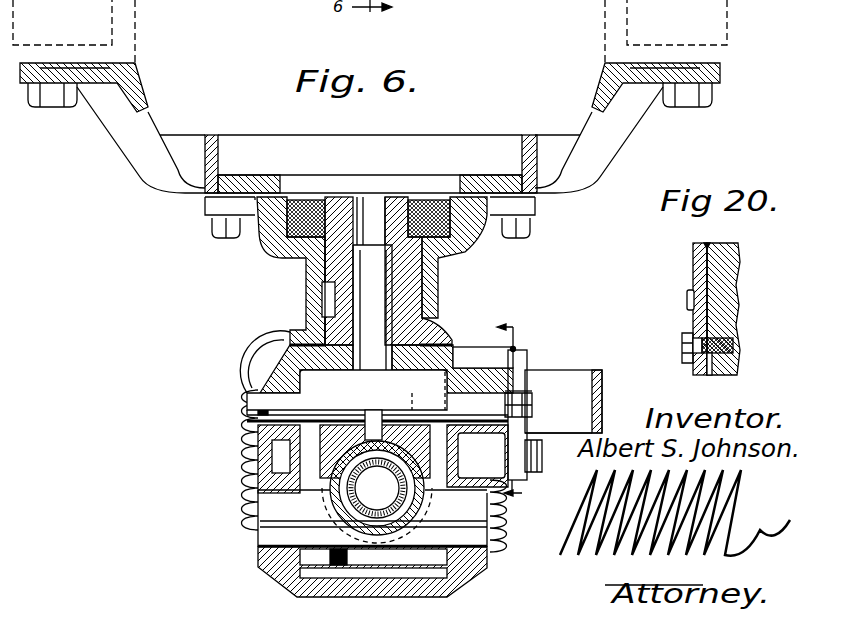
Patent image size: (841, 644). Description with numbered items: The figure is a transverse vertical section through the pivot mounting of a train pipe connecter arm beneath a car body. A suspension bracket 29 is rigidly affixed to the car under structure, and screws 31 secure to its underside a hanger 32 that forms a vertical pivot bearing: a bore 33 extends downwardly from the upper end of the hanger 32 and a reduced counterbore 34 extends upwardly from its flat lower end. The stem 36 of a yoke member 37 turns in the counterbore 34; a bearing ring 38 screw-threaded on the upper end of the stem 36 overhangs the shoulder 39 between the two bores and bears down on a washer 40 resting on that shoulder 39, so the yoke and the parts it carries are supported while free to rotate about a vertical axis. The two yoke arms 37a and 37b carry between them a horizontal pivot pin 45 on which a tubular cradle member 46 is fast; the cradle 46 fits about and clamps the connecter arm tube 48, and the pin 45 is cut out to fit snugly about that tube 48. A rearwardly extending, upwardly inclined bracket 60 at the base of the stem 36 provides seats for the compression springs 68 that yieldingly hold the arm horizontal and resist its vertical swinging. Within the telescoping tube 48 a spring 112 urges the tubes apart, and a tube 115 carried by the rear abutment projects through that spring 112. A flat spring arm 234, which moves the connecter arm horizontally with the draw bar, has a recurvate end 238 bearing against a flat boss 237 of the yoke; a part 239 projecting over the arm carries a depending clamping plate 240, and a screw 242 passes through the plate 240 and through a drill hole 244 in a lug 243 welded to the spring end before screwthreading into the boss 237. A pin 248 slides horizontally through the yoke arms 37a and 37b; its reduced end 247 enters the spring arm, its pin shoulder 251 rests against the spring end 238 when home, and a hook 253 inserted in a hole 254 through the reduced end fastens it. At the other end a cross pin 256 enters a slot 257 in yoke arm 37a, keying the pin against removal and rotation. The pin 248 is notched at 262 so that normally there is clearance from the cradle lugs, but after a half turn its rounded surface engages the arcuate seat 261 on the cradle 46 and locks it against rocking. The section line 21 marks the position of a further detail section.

In FIG. 6, the suspension bracket 29 is at (593, 99).
In FIG. 6, the screws 31 is at (231, 235).
In FIG. 6, the hanger 32 is at (273, 242).
In FIG. 6, the bore 33 is at (310, 198).
In FIG. 6, the counterbore 34 is at (325, 260).
In FIG. 6, the stem 36 is at (408, 298).
In FIG. 6, the yoke member 37 is at (273, 361).
In FIG. 6, the yoke arm 37a is at (270, 458).
In FIG. 6, the yoke arm 37b is at (456, 451).
In FIG. 6, the bearing ring 38 is at (423, 206).
In FIG. 6, the shoulder 39 is at (454, 263).
In FIG. 6, the washer 40 is at (479, 242).
In FIG. 6, the horizontal pivot pin 45 is at (372, 518).
In FIG. 6, the cradle member 46 is at (460, 571).
In FIG. 6, the connecter arm tube 48 is at (424, 510).
In FIG. 6, the bracket 60 is at (266, 337).
In FIG. 6, the compression springs 68 is at (256, 451).
In FIG. 6, the spring 112 is at (343, 503).
In FIG. 6, the tube 115 is at (345, 507).
In FIG. 6, the spring arm 234 is at (599, 372).
In FIG. 20, the boss 237 is at (722, 313).
In FIG. 6, the recurvate end 238 is at (515, 386).
In FIG. 20, the recurvate end 238 is at (705, 282).
In FIG. 6, the projecting part 239 is at (481, 356).
In FIG. 20, the projecting part 239 is at (709, 245).
In FIG. 20, the clamping plate 240 is at (693, 320).
In FIG. 20, the screw 242 is at (695, 348).
In FIG. 20, the lug 243 is at (737, 338).
In FIG. 20, the drill hole 244 is at (741, 357).
In FIG. 6, the reduced end 247 is at (533, 404).
In FIG. 6, the pin 248 is at (318, 400).
In FIG. 6, the pin shoulder 251 is at (506, 398).
In FIG. 6, the hook 253 is at (519, 397).
In FIG. 6, the hole 254 is at (536, 414).
In FIG. 6, the cross pin 256 is at (259, 407).
In FIG. 6, the slot 257 is at (252, 417).
In FIG. 6, the arcuate seat 261 is at (396, 420).
In FIG. 6, the notch 262 is at (372, 418).
In FIG. 6, the section line 21 is at (520, 413).